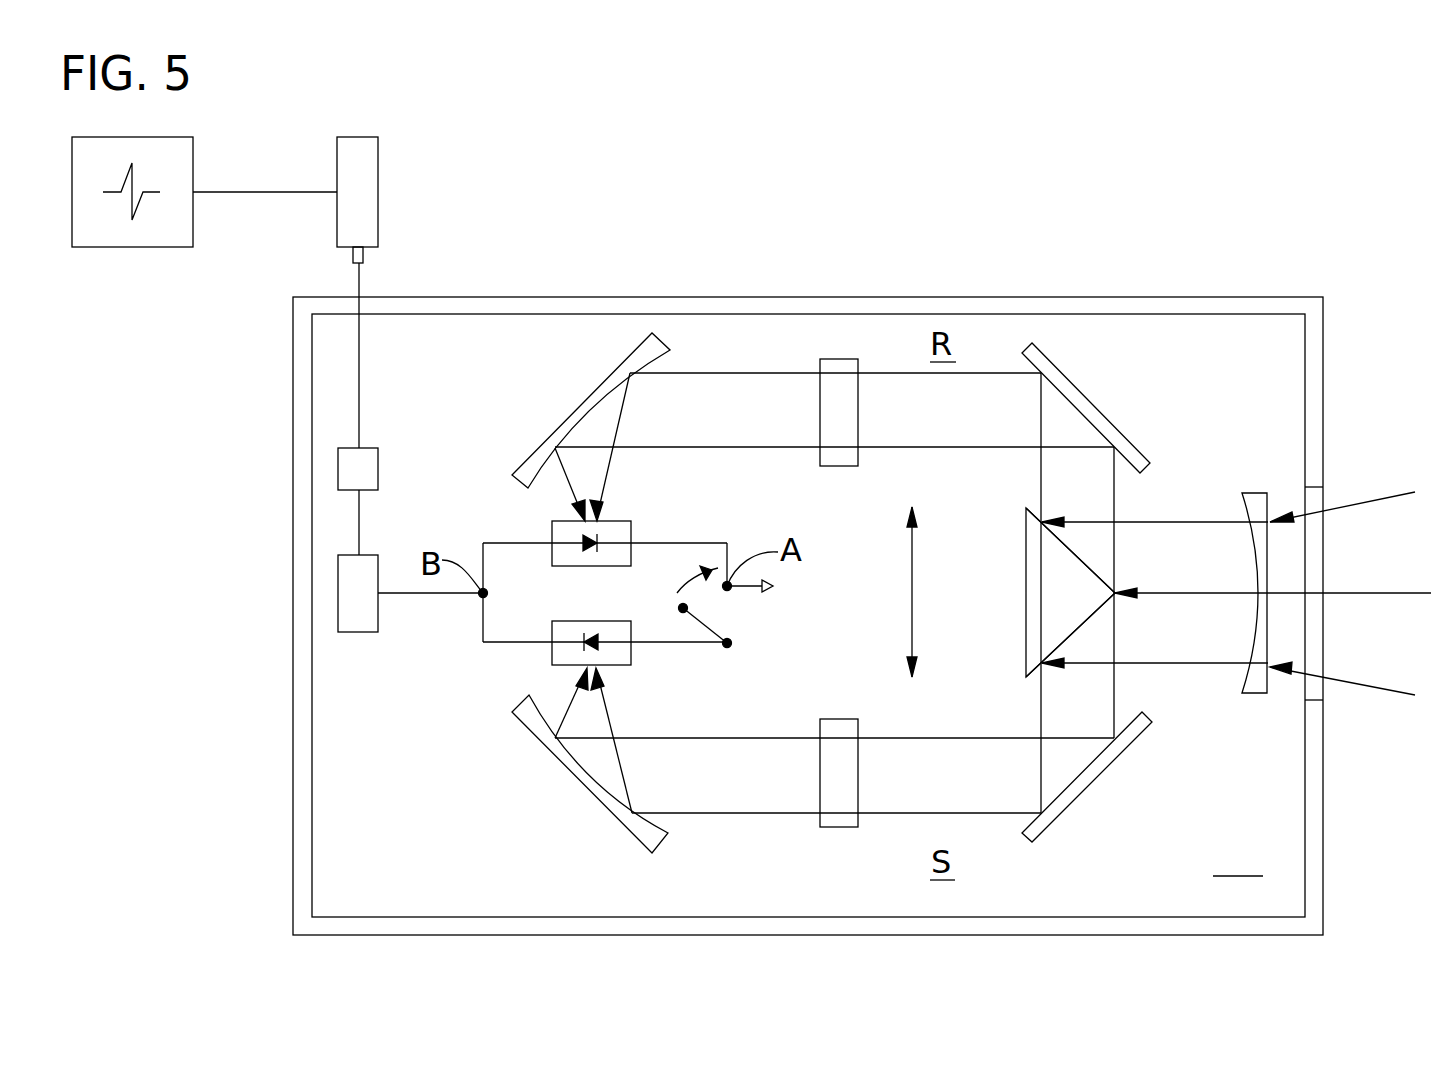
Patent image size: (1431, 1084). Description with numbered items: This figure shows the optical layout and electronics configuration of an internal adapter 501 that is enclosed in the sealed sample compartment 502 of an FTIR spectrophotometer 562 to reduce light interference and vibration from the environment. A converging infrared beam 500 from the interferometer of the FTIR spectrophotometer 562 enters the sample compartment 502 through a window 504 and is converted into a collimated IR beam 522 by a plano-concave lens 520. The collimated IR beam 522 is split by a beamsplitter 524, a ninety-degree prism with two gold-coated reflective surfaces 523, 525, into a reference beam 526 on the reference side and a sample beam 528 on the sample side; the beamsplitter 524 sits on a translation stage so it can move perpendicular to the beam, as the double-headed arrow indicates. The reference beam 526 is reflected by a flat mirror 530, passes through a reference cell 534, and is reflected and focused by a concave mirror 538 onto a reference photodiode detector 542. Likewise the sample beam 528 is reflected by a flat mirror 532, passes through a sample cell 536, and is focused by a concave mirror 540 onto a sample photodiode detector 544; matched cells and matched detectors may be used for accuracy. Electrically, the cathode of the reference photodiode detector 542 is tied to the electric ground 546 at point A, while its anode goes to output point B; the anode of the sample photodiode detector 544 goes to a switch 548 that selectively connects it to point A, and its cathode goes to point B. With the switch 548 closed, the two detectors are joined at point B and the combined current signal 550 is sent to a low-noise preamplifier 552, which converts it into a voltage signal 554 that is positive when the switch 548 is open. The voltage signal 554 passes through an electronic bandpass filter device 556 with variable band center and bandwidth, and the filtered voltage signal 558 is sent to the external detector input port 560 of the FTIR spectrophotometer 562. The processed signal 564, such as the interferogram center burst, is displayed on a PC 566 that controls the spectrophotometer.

The converging infrared beam 500 is at (1397, 480).
The internal adapter 501 is at (1238, 857).
The sample compartment 502 is at (1312, 805).
The window 504 is at (1318, 690).
The plano-concave lens 520 is at (1250, 493).
The collimated IR beam 522 is at (1215, 522).
The reflective surface 523 is at (1050, 665).
The beamsplitter 524 is at (1026, 603).
The reflective surface 525 is at (1070, 550).
The reference beam 526 is at (1041, 470).
The sample beam 528 is at (1041, 712).
The flat mirror 530 is at (1094, 403).
The flat mirror 532 is at (1093, 780).
The reference cell 534 is at (850, 466).
The sample cell 536 is at (843, 827).
The concave mirror 538 is at (582, 392).
The concave mirror 540 is at (583, 785).
The reference photodiode detector 542 is at (615, 515).
The sample photodiode detector 544 is at (620, 665).
The electric ground 546 is at (773, 586).
The switch 548 is at (683, 608).
The combined current signal 550 is at (422, 596).
The low-noise preamplifier 552 is at (352, 632).
The voltage signal 554 is at (359, 530).
The electronic bandpass filter device 556 is at (378, 470).
The voltage signal 558 is at (359, 408).
The external detector input port 560 is at (364, 258).
The FTIR spectrophotometer 562 is at (379, 160).
The processed signal 564 is at (268, 192).
The PC 566 is at (131, 247).